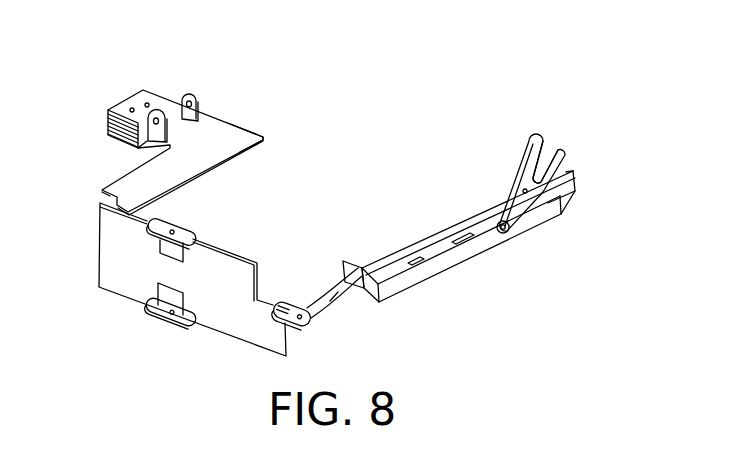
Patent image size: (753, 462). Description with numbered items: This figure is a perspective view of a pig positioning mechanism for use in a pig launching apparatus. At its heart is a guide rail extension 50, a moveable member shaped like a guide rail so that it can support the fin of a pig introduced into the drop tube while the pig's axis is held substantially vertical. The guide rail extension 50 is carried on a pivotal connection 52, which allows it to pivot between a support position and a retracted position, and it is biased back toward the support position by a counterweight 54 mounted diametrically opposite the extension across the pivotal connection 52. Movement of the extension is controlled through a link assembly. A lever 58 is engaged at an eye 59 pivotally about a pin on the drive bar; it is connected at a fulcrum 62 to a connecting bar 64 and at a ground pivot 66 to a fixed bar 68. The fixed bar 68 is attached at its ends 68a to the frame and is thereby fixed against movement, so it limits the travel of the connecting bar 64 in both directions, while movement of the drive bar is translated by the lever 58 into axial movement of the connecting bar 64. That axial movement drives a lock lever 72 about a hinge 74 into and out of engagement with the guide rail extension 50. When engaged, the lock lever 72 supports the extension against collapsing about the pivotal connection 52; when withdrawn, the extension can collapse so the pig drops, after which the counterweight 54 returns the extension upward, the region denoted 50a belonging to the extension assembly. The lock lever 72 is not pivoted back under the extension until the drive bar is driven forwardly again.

The guide rail extension 50 is at (197, 179).
The bracket arm end 50a is at (242, 130).
The pivotal connection 52 is at (188, 91).
The counterweight 54 is at (107, 121).
The lever 58 is at (542, 190).
The eye 59 is at (548, 152).
The fulcrum 62 is at (524, 187).
The connecting bar 64 is at (347, 295).
The ground pivot 66 is at (506, 231).
The fixed bar 68 is at (453, 270).
The ends 68a is at (342, 277).
The lock lever 72 is at (122, 273).
The hinge 74 is at (170, 313).